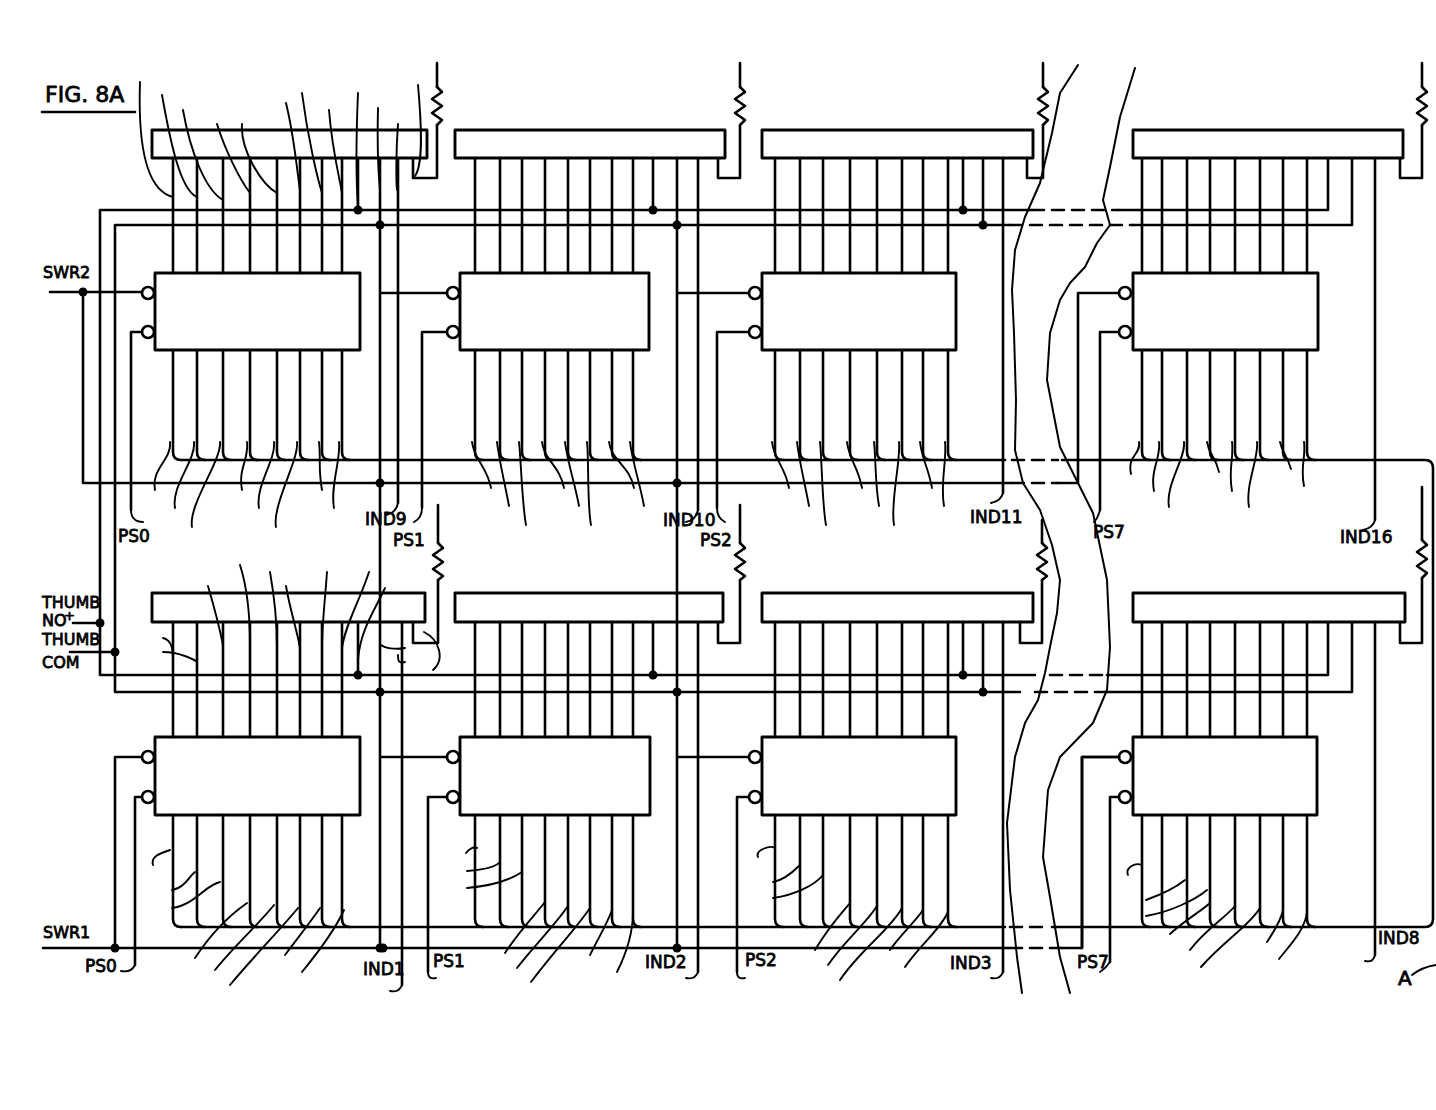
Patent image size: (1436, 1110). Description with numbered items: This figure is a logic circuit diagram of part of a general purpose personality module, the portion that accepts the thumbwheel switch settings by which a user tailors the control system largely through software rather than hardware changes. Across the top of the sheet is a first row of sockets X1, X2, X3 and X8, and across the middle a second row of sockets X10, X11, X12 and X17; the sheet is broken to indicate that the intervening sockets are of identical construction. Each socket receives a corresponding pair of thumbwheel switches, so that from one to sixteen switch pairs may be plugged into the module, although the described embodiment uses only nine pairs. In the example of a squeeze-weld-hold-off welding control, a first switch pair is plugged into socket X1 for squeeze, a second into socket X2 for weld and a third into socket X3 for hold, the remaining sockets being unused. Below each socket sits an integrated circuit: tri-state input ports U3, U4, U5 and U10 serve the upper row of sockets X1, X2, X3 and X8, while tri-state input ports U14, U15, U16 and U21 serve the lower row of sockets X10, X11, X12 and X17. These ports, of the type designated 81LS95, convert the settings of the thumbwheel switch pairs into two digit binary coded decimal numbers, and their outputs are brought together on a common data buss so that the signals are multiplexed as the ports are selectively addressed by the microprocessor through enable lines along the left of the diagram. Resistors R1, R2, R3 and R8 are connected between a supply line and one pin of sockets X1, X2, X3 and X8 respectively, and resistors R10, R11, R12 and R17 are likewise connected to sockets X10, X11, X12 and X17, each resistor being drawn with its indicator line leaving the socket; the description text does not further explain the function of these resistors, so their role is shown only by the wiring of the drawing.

The socket X1 is at (282, 133).
The socket X2 is at (590, 154).
The socket X3 is at (895, 154).
The socket X8 is at (1265, 154).
The socket X10 is at (284, 610).
The socket X11 is at (589, 617).
The socket X12 is at (895, 617).
The socket X17 is at (1263, 617).
The tri-state input port U3 is at (243, 351).
The tri-state input port U4 is at (548, 350).
The tri-state input port U5 is at (849, 350).
The tri-state input port U10 is at (1214, 341).
The tri-state input port U14 is at (243, 811).
The tri-state input port U15 is at (541, 810).
The tri-state input port U16 is at (847, 809).
The tri-state input port U21 is at (1212, 803).
The indicator pull-up resistor R1 180 ohm R1 is at (451, 120).
The indicator pull-up resistor R2 180 ohm R2 is at (756, 117).
The indicator pull-up resistor R3 180 ohm R3 is at (1040, 102).
The indicator pull-up resistor R8 180 ohm R8 is at (1414, 102).
The indicator pull-up resistor R10 180 ohm R10 is at (452, 569).
The indicator pull-up resistor R11 180 ohm R11 is at (755, 569).
The indicator pull-up resistor R12 180 ohm R12 is at (1025, 581).
The indicator pull-up resistor R17 180 ohm R17 is at (1416, 564).